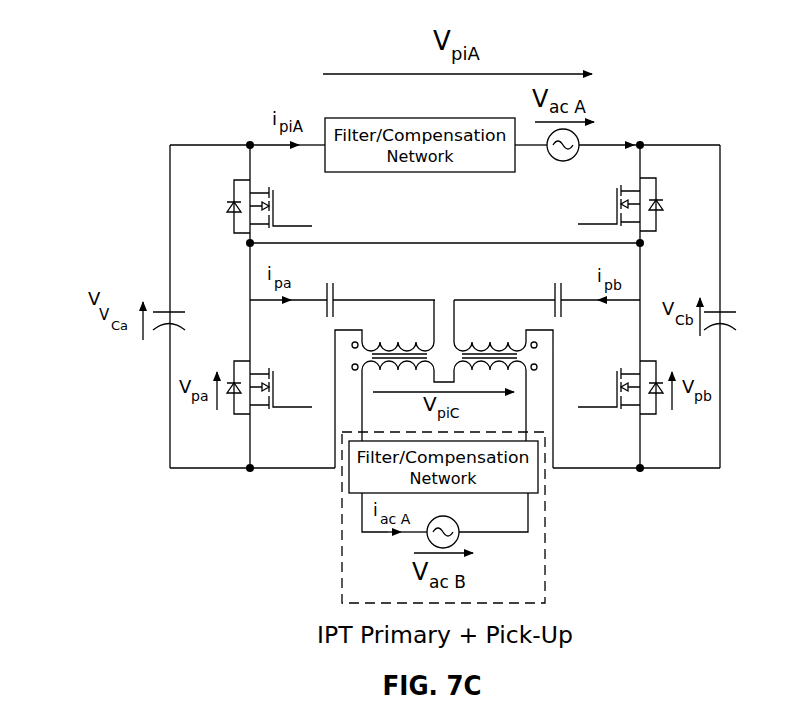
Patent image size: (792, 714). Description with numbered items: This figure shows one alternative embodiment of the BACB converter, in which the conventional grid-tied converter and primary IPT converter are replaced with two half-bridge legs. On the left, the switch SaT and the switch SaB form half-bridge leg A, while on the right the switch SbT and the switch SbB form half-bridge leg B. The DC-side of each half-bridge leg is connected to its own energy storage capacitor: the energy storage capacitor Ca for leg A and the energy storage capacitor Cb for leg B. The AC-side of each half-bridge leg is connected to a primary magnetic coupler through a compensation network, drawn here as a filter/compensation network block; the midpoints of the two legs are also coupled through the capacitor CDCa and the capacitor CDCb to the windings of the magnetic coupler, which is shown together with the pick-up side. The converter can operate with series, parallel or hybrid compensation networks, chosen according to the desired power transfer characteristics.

The switch SaT is at (269, 206).
The switch SaB is at (269, 387).
The switch SbT is at (620, 204).
The switch SbB is at (620, 387).
The energy storage capacitor Ca is at (182, 320).
The energy storage capacitor Cb is at (734, 320).
The capacitor CDCa is at (342, 282).
The capacitor CDCb is at (547, 282).